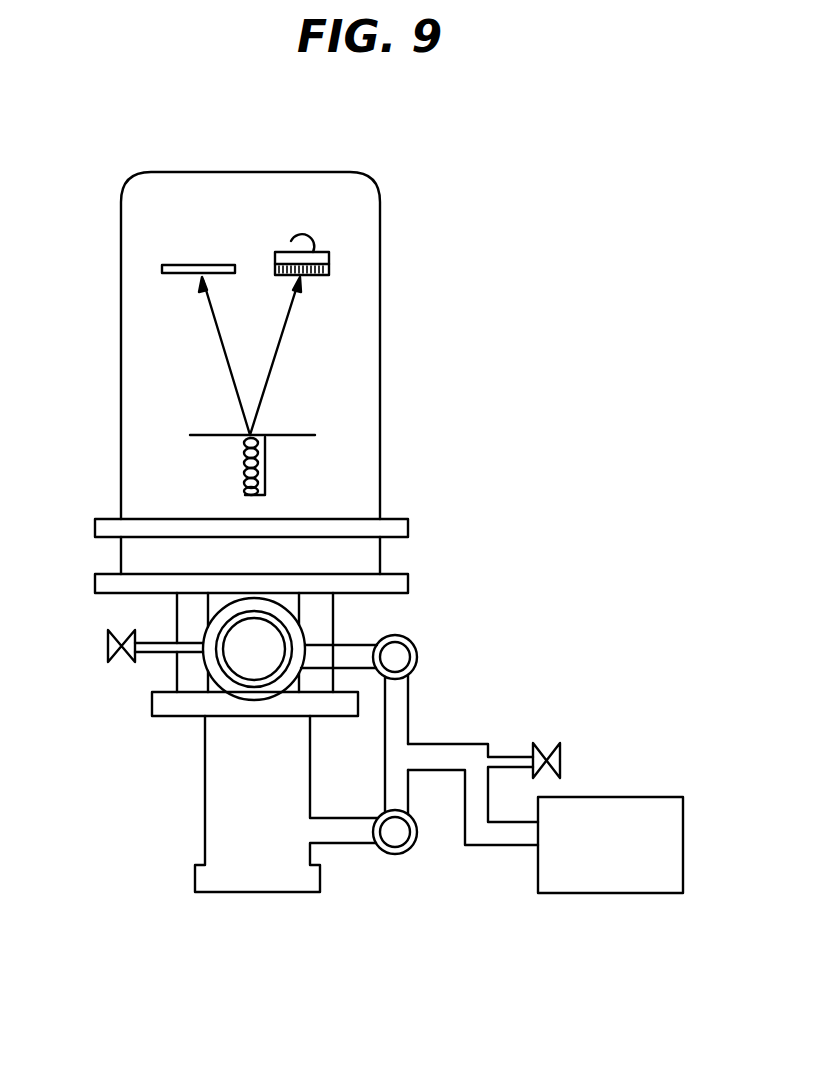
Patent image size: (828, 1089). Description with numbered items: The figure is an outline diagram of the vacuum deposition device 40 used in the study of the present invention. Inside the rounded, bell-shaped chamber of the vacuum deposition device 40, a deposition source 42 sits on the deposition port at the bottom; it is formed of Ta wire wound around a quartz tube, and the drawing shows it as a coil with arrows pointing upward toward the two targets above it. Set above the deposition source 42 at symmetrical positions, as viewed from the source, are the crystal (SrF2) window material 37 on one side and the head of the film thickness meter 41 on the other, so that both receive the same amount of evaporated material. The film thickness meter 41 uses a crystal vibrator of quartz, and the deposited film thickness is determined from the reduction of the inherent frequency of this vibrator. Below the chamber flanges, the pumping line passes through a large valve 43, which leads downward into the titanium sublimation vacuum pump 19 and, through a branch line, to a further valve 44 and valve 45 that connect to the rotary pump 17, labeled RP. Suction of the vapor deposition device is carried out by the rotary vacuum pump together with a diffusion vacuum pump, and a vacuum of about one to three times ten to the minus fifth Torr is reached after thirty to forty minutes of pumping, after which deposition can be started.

The rotary pump 17 is at (590, 882).
The titanium sublimation vacuum pump 19 is at (263, 878).
The crystal (SrF2) window material 37 is at (172, 265).
The vacuum deposition device 40 is at (264, 153).
The film thickness meter 41 is at (307, 256).
The deposition source 42 is at (265, 462).
The valve 43 is at (280, 633).
The valve 44 is at (417, 652).
The valve 45 is at (405, 851).